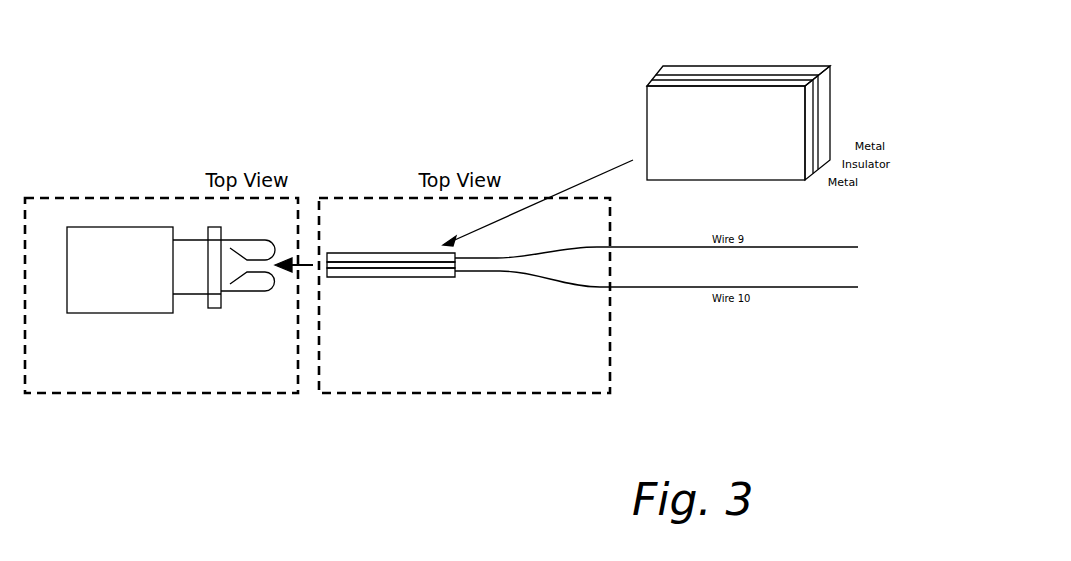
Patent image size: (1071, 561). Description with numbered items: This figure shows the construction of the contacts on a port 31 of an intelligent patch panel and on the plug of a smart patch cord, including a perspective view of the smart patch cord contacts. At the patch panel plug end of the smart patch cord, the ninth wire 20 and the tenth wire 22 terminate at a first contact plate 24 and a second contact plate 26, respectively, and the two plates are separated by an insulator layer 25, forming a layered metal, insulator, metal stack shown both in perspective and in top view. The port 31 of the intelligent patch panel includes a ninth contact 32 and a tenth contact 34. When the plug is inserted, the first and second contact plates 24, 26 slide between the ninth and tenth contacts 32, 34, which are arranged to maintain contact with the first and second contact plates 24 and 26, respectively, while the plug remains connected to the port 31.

The ninth wire 20 is at (672, 247).
The tenth wire 22 is at (655, 288).
The first contact plate 24 is at (762, 72).
The insulator layer 25 is at (815, 102).
The second contact plate 26 is at (758, 172).
The port 31 is at (197, 318).
The ninth contact 32 is at (258, 238).
The tenth contact 34 is at (255, 293).